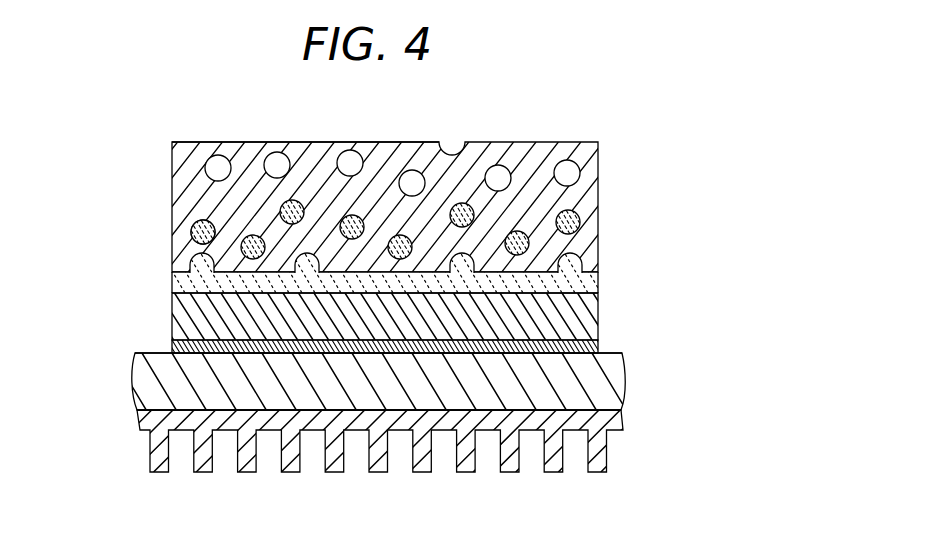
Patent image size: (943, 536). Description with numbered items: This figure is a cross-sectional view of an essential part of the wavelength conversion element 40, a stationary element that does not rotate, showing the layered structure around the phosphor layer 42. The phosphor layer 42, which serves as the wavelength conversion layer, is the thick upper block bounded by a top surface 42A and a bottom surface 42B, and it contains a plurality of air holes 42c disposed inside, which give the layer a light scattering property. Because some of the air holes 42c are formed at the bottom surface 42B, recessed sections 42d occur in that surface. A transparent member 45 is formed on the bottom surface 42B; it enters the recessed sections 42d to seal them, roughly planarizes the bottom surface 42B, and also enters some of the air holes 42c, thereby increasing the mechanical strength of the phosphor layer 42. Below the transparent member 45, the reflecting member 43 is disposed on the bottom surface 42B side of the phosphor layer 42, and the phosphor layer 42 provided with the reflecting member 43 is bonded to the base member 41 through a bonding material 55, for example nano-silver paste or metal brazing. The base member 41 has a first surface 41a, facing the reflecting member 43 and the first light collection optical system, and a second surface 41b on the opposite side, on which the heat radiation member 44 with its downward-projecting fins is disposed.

The wavelength conversion element 40 is at (369, 279).
The base member 41 is at (605, 382).
The first surface 41a is at (135, 353).
The second surface 41b is at (140, 426).
The phosphor layer 42 is at (587, 200).
The top surface of the phosphor layer 42A is at (185, 142).
The bottom surface 42B is at (172, 288).
The air holes 42c is at (412, 170).
The recessed sections 42d is at (190, 262).
The reflecting member 43 is at (598, 323).
The heat radiation member 44 is at (598, 455).
The transparent member 45 is at (389, 192).
The bonding material 55 is at (598, 346).